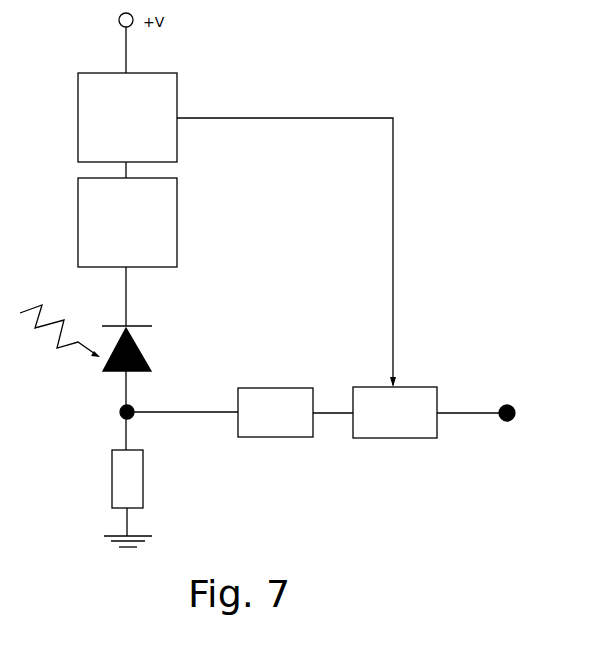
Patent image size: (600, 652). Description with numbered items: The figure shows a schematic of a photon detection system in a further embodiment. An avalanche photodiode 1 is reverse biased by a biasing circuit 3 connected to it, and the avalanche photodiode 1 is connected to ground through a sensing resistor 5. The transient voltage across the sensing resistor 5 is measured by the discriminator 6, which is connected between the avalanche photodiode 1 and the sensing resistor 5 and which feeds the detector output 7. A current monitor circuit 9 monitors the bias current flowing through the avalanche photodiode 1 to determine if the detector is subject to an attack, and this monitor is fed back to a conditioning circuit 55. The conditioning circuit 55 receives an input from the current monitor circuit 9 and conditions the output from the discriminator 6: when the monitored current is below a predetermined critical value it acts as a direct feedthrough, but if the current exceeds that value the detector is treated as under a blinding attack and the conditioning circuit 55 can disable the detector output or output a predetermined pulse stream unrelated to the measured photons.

The avalanche photodiode 1 is at (158, 343).
The biasing circuit 3 is at (72, 232).
The sensing resistor 5 is at (110, 470).
The discriminator 6 is at (297, 386).
The detector output 7 is at (197, 420).
The current monitor circuit 9 is at (70, 120).
The conditioning circuit 55 is at (427, 380).